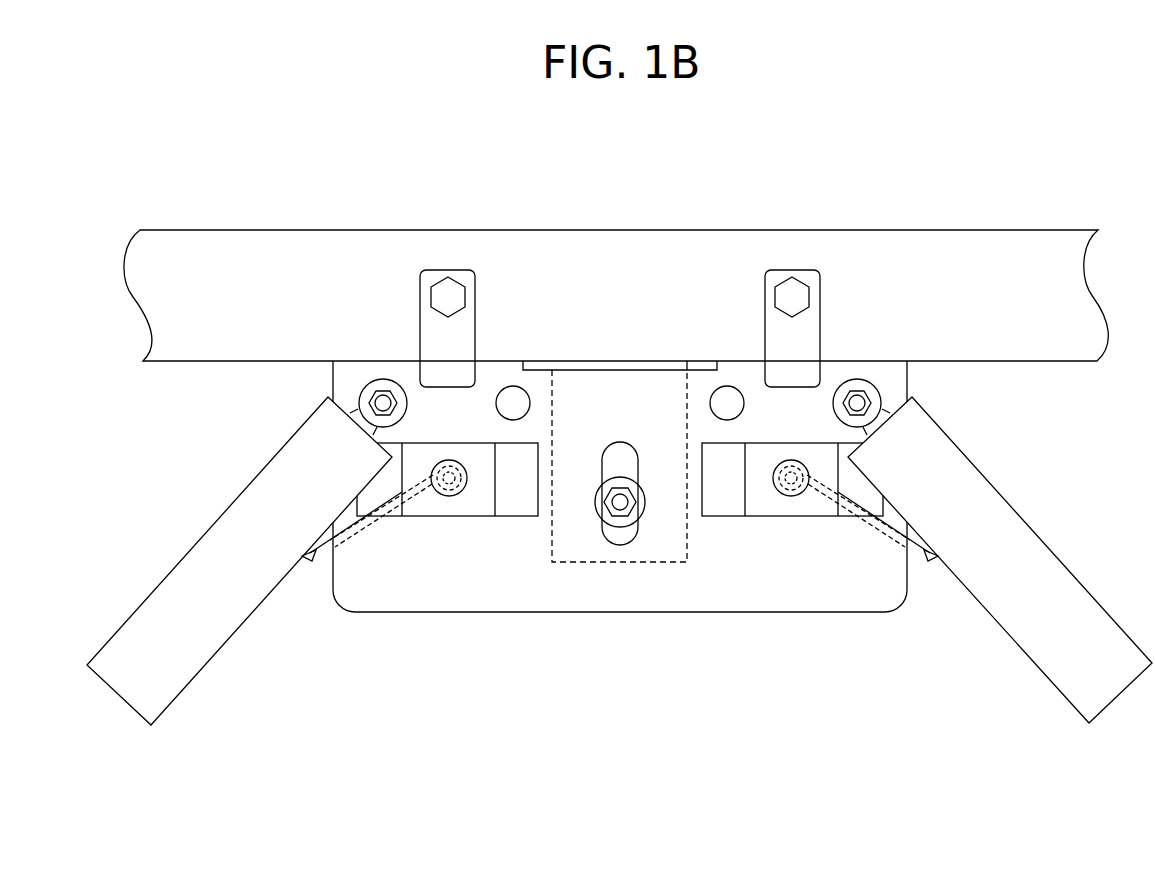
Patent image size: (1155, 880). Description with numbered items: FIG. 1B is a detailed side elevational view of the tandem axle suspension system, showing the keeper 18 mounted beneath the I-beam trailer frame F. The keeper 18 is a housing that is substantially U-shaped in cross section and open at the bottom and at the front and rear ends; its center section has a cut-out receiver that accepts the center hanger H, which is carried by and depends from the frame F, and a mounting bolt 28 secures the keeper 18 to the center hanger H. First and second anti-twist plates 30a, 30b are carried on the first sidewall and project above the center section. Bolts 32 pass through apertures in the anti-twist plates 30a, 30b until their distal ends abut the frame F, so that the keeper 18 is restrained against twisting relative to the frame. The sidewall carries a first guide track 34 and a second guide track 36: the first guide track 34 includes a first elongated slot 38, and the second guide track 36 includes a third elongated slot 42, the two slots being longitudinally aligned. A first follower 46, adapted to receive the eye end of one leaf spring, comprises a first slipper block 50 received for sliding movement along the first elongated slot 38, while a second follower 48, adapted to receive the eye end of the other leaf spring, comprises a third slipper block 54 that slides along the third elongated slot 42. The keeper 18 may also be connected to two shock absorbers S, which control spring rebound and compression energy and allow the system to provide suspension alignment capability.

The keeper 18 is at (422, 598).
The mounting bolt 28 is at (622, 518).
The first anti-twist plate 30a is at (463, 334).
The second anti-twist plate 30b is at (773, 334).
The bolt 32 is at (447, 292).
The first guide track 34 is at (432, 432).
The second guide track 36 is at (808, 432).
The first elongated slot 38 is at (513, 510).
The third elongated slot 42 is at (720, 507).
The first follower 46 is at (418, 507).
The second follower 48 is at (798, 507).
The first slipper block 50 is at (367, 518).
The third slipper block 54 is at (872, 518).
The I-beam trailer frame F is at (975, 258).
The shock absorber S is at (200, 570).
The center hanger H is at (583, 562).